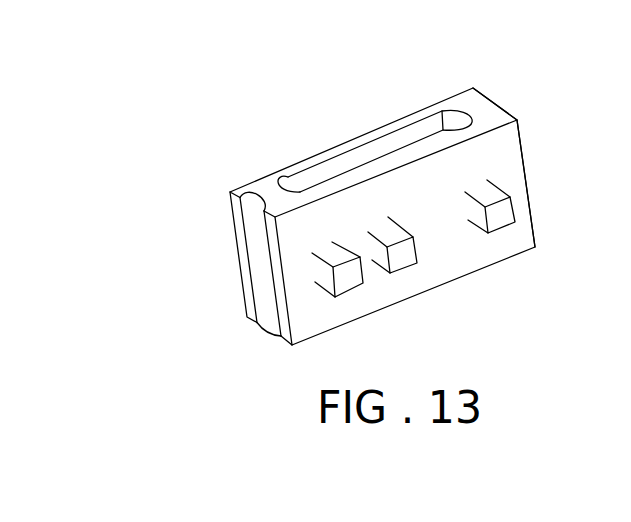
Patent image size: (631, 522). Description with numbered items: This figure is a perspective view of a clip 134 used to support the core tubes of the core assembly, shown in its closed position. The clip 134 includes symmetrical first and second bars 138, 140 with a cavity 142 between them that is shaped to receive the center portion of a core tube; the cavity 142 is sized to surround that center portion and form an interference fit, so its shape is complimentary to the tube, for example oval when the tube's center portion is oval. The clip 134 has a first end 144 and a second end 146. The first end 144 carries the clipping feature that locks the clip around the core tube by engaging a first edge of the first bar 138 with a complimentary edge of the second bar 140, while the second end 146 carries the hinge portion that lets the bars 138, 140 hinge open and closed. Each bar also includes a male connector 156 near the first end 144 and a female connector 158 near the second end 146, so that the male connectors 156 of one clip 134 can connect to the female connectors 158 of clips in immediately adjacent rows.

The clip 134 is at (250, 117).
The first bar 138 is at (357, 140).
The second bar 140 is at (500, 121).
The cavity 142 is at (413, 137).
The first end 144 is at (512, 87).
The second end 146 is at (212, 238).
The male connector 156 is at (492, 196).
The female connector 158 is at (336, 257).